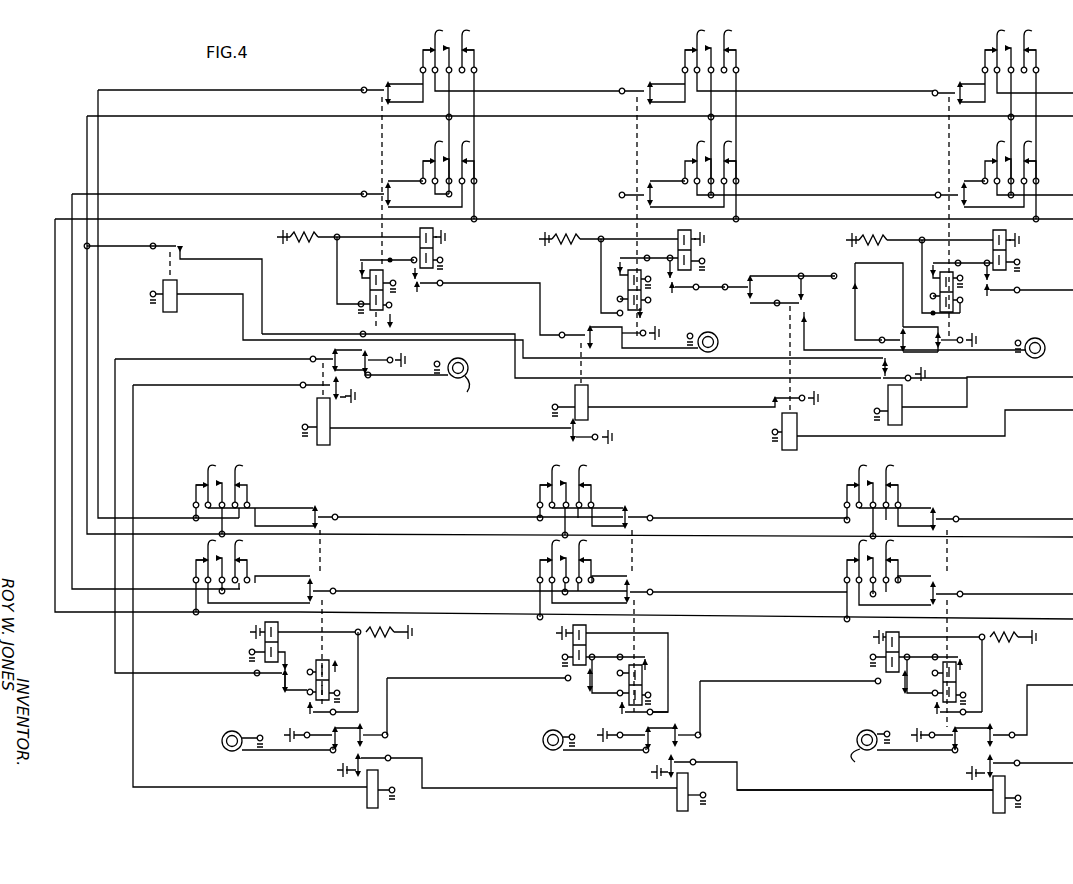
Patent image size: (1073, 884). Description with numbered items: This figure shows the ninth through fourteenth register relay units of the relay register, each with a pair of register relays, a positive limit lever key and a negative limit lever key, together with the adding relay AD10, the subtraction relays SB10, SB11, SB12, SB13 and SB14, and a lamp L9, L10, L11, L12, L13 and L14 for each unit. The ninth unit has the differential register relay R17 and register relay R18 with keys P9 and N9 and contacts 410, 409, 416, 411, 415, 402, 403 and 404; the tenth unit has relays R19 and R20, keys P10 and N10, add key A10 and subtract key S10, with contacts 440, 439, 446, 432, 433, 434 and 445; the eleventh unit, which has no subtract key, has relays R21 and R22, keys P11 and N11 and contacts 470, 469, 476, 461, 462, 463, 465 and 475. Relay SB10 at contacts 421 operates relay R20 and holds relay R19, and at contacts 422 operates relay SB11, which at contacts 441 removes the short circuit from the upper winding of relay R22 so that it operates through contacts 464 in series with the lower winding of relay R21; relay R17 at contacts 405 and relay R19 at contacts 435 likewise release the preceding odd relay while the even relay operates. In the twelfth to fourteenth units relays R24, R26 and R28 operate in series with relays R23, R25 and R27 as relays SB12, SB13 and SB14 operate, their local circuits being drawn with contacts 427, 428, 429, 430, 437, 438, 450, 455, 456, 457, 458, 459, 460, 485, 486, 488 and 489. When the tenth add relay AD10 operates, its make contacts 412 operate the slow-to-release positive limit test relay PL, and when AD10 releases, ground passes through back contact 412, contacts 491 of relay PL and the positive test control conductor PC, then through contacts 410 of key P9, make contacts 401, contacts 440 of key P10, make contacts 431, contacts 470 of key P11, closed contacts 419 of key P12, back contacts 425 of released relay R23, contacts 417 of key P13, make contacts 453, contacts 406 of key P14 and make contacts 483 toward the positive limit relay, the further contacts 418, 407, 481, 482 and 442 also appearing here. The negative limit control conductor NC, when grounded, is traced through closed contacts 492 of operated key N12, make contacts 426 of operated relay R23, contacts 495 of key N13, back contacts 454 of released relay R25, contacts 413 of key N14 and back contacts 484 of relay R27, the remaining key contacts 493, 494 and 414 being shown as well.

The positive test control conductor PC is at (278, 114).
The negative limit control conductor NC is at (54, 276).
The relay contact 461 is at (382, 86).
The relay contact 462 is at (368, 194).
The relay contact 463 is at (381, 259).
The contacts 464 is at (395, 334).
The relay contact 465 is at (391, 357).
The relay contact 469 is at (458, 58).
The contacts of key P11 470 is at (419, 60).
The relay contact 475 is at (437, 285).
The relay contact 476 is at (422, 166).
The positive limit lever key P11 is at (520, 123).
The negative limit lever key N11 is at (448, 159).
The register relay R22 is at (446, 243).
The register relay R21 is at (396, 298).
The contacts of relay PL 491 is at (182, 255).
The positive limit test relay PL is at (179, 292).
The make contacts 431 is at (642, 86).
The relay contact 432 is at (635, 194).
The relay contact 433 is at (642, 256).
The relay contact 434 is at (650, 312).
The contacts of relay R19 435 is at (650, 323).
The relay contact 439 is at (730, 56).
The contacts of key P10 440 is at (683, 64).
The make contacts of relay SB11 441 is at (583, 330).
The relay contact 445 is at (685, 281).
The relay contact 446 is at (725, 163).
The positive limit lever key P10 is at (807, 122).
The negative limit lever key N10 is at (809, 159).
The register relay R20 is at (644, 270).
The register relay R19 is at (628, 283).
The lamp L10 is at (706, 333).
The subtraction turn key S10 is at (744, 278).
The addition turn key A10 is at (913, 302).
The make contacts of relay SB10 421 is at (814, 345).
The make contacts 401 is at (940, 89).
The relay contact 402 is at (947, 194).
The contacts 403 is at (959, 259).
The relay contact 404 is at (963, 316).
The contacts of relay R17 405 is at (950, 337).
The relay contact 409 is at (1022, 56).
The contacts of key P9 410 is at (983, 67).
The relay contact 411 is at (892, 336).
The contacts of relay AD10 412 is at (915, 369).
The relay contact 415 is at (996, 286).
The relay contact 416 is at (1022, 163).
The positive limit lever key P9 is at (1027, 124).
The negative limit lever key N9 is at (1027, 160).
The register relay R18 is at (1021, 250).
The register relay R17 is at (940, 293).
The lamp L9 is at (1052, 339).
The relay contact 481 is at (313, 361).
The relay contact 482 is at (310, 397).
The subtraction relay SB12 is at (330, 417).
The lamp L11 is at (452, 381).
The relay contact 442 is at (583, 433).
The subtraction relay SB11 is at (588, 397).
The contacts of relay SB10 422 is at (766, 401).
The subtraction relay SB10 is at (922, 430).
The adding relay AD10 is at (902, 419).
The positive limit lever key P12 is at (254, 492).
The contacts of key P12 419 is at (196, 479).
The back contacts of relay R23 425 is at (322, 518).
The negative limit lever key N12 is at (251, 577).
The contacts of key N12 492 is at (196, 559).
The relay contact 493 is at (248, 559).
The make contacts of relay R23 426 is at (322, 589).
The positive limit lever key P13 is at (581, 494).
The relay contact 418 is at (540, 485).
The contacts of key P13 417 is at (589, 486).
The make contacts 453 is at (640, 508).
The negative limit lever key N13 is at (583, 580).
The relay contact 494 is at (535, 553).
The contacts of key N13 495 is at (581, 553).
The back contacts of relay R25 454 is at (640, 594).
The positive limit lever key P14 is at (888, 493).
The relay contact 407 is at (846, 482).
The contacts of key P14 406 is at (894, 483).
The make contacts 483 is at (937, 519).
The negative limit lever key N14 is at (892, 581).
The relay contact 414 is at (853, 557).
The contacts of key N14 413 is at (889, 558).
The back contacts of relay R27 484 is at (947, 596).
The register relay R24 is at (252, 639).
The relay contact 430 is at (278, 680).
The register relay R23 is at (436, 697).
The relay contact 427 is at (353, 650).
The relay contact 428 is at (303, 708).
The relay contact 429 is at (312, 732).
The relay contact 437 is at (370, 729).
The lamp L12 is at (242, 733).
The relay contact 438 is at (377, 778).
The subtraction relay SB13 is at (378, 805).
The register relay R26 is at (560, 654).
The relay contact 455 is at (653, 665).
The register relay R25 is at (648, 672).
The relay contact 450 is at (572, 682).
The relay contact 456 is at (611, 708).
The relay contact 457 is at (626, 731).
The relay contact 458 is at (722, 732).
The lamp L13 is at (566, 733).
The relay contact 459 is at (822, 772).
The subtraction relay SB14 is at (709, 797).
The register relay R28 is at (878, 650).
The relay contact 485 is at (966, 663).
The register relay R27 is at (958, 684).
The relay contact 460 is at (880, 687).
The relay contact 486 is at (925, 713).
The relay contact 488 is at (1008, 719).
The lamp L14 is at (904, 751).
The relay contact 489 is at (1019, 771).